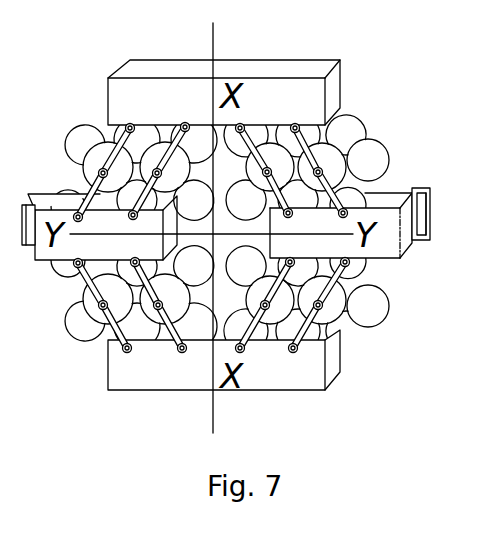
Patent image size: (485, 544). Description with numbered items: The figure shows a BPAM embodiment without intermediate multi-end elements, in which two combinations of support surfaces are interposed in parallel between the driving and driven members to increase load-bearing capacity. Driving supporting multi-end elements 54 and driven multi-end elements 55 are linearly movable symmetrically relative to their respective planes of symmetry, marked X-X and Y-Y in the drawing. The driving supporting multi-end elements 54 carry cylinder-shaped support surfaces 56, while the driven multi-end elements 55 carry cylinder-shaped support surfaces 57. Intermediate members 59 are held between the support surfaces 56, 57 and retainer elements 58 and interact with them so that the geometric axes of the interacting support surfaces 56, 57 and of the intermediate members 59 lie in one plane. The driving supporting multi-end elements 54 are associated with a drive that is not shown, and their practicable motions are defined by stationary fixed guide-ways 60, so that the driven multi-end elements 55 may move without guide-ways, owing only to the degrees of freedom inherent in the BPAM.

The driving supporting multi-end element 54 is at (70, 249).
The driven multi-end element 55 is at (108, 42).
The cylinder-shaped support surface 56 is at (70, 195).
The cylinder-shaped support surface 57 is at (128, 128).
The retainer element 58 is at (80, 185).
The intermediate member 59 is at (92, 160).
The stationary fixed guide-way 60 is at (33, 192).